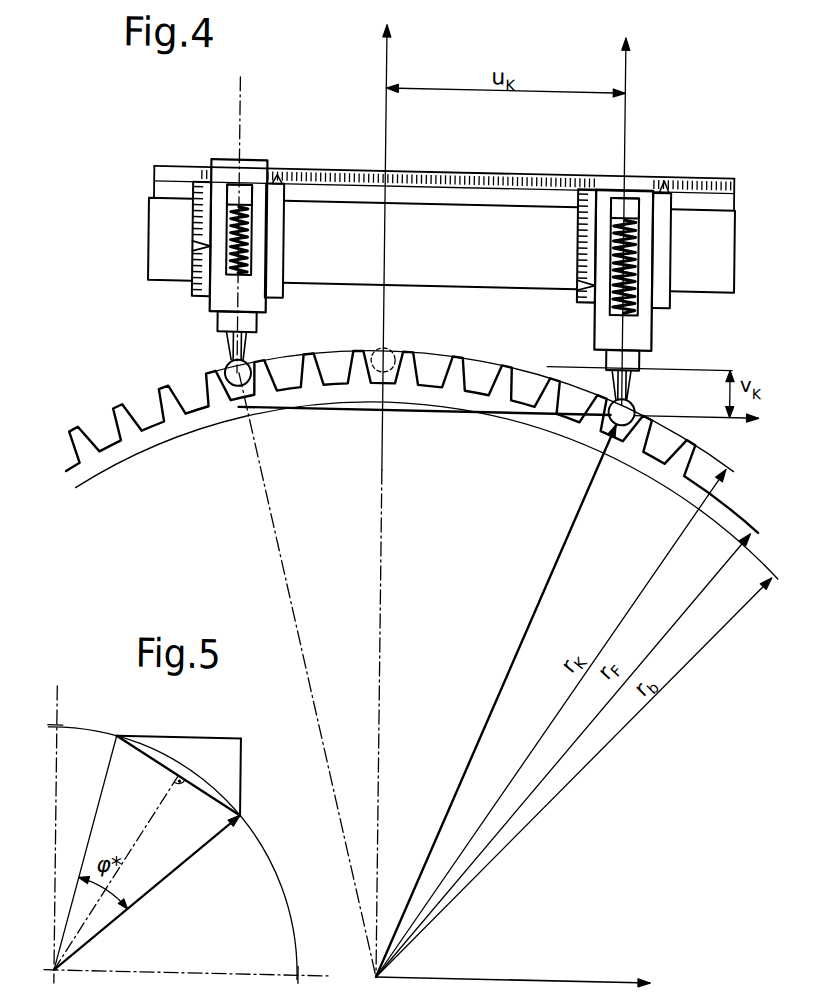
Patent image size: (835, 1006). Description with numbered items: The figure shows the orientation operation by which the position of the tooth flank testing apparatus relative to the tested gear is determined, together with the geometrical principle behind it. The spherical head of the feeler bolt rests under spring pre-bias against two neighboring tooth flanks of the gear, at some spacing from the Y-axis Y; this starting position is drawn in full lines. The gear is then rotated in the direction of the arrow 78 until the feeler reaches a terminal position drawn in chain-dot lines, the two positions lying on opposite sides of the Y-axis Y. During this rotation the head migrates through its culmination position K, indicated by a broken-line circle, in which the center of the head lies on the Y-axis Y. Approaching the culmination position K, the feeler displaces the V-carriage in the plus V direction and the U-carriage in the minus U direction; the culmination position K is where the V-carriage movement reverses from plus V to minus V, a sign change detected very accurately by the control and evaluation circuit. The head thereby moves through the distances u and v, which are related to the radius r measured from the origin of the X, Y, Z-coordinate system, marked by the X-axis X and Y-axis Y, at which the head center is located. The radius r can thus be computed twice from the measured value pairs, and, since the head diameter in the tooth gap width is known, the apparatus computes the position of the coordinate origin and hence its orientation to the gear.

In FIG. 4, the arrow 78 is at (487, 530).
In FIG. 4, the culmination position K is at (385, 350).
In FIG. 4, the U direction U is at (503, 426).
In FIG. 4, the V direction V is at (635, 215).
In FIG. 4, the X-axis X is at (514, 961).
In FIG. 4, the Y-axis Y is at (391, 499).
In FIG. 4, the radius r is at (496, 701).
In FIG. 5, the radius r is at (147, 892).
In FIG. 5, the u coordinate u is at (179, 723).
In FIG. 5, the v coordinate v is at (250, 776).